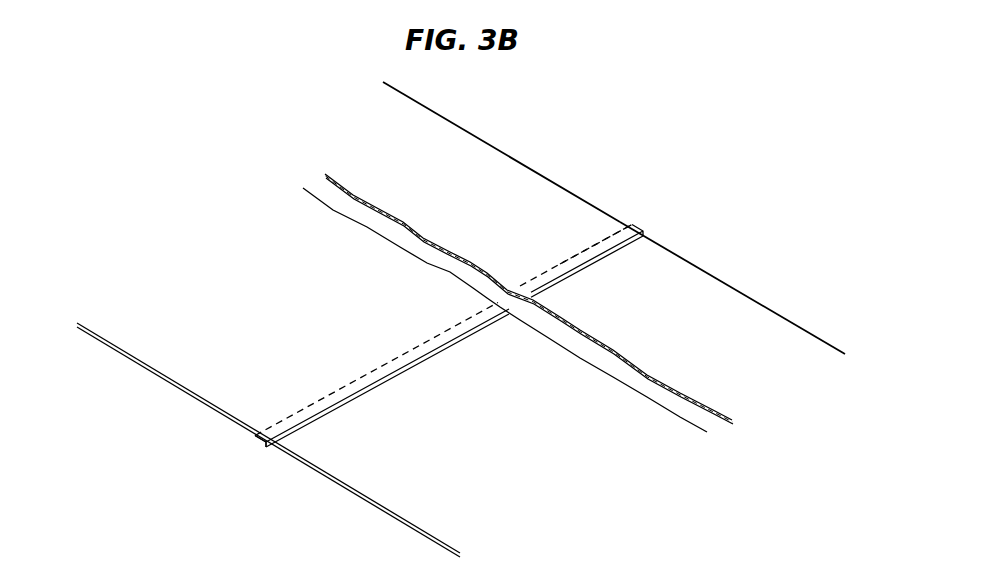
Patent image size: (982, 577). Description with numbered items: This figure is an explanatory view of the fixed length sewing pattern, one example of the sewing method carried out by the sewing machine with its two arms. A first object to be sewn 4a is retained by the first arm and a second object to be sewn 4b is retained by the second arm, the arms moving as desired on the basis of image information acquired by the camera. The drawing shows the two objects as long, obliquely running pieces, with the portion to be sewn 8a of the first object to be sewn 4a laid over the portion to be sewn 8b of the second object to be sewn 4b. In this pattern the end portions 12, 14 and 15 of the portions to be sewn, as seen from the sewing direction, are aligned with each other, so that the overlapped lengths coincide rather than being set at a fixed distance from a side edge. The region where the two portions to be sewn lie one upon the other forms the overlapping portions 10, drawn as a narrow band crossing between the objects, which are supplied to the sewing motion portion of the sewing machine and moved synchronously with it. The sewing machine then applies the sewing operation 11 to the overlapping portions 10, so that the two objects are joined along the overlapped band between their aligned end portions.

The first object to be sewn 4a is at (495, 168).
The second object to be sewn 4b is at (709, 297).
The portion to be sewn 8a is at (277, 433).
The portion to be sewn 8b is at (265, 448).
The overlapping portions 10 is at (600, 238).
The sewing operation 11 is at (372, 373).
The end portion 12 is at (637, 225).
The end portion 14 is at (277, 447).
The end portion 15 is at (260, 443).